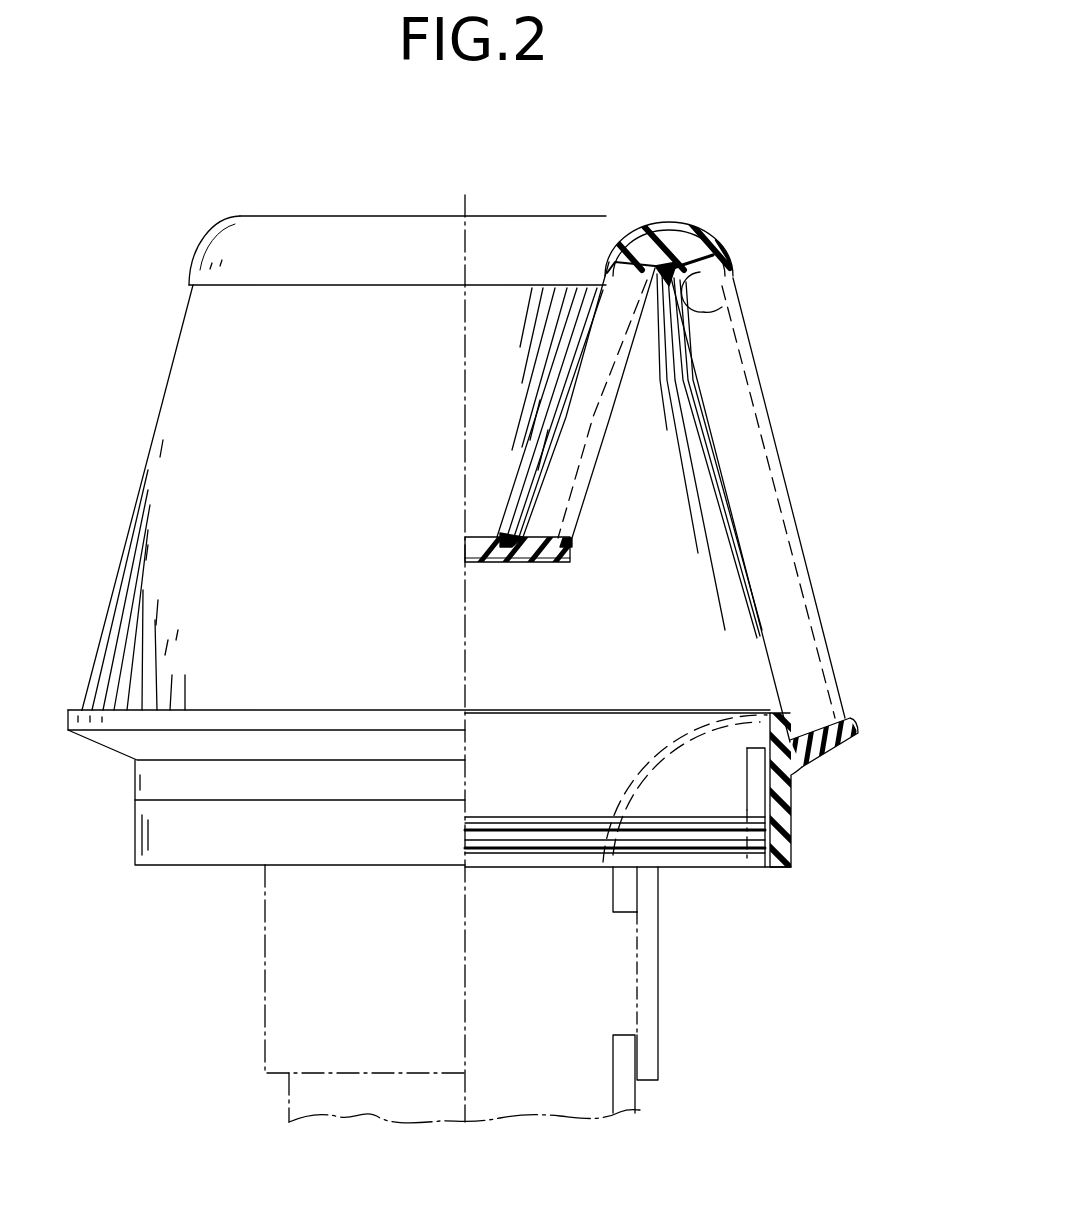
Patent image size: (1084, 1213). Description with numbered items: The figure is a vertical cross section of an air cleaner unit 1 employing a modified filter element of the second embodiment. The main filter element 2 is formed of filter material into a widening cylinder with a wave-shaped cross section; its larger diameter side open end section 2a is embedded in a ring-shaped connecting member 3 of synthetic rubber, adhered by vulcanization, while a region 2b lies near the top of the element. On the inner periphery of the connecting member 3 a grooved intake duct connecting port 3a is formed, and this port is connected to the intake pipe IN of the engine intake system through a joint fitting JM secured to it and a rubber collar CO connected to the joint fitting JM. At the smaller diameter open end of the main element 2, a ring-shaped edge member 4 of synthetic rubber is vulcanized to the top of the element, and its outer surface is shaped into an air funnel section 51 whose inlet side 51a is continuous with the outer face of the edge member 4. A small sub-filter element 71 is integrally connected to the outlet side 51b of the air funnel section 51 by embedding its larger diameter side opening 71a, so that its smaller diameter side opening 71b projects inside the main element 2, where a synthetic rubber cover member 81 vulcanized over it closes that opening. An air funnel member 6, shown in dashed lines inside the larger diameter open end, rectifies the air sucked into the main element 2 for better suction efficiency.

The air cleaner unit 1 is at (795, 240).
The main filter element 2 is at (770, 443).
The larger diameter side open end section 2a is at (828, 722).
The case top bend 2b is at (722, 307).
The connecting member 3 is at (805, 770).
The intake duct connecting port 3a is at (727, 877).
The edge member 4 is at (670, 247).
The air funnel member 6 is at (635, 767).
The air funnel section 51 is at (572, 250).
The inlet side 51a is at (518, 222).
The outlet side 51b is at (500, 288).
The sub-filter element 71 is at (590, 487).
The larger diameter side opening 71a is at (640, 222).
The smaller diameter side opening 71b is at (543, 540).
The cover member 81 is at (487, 562).
The joint fitting JM is at (678, 870).
The rubber collar CO is at (658, 988).
The intake pipe IN is at (637, 1097).